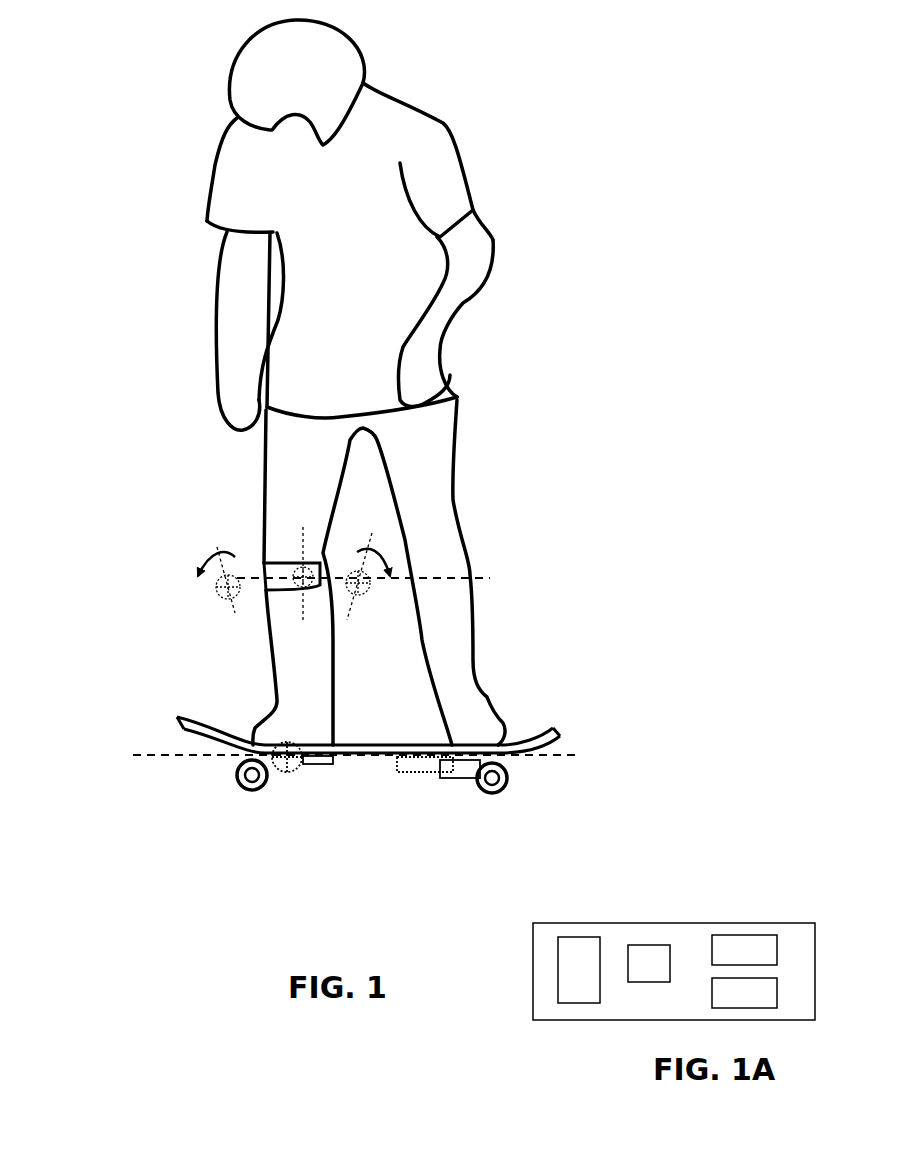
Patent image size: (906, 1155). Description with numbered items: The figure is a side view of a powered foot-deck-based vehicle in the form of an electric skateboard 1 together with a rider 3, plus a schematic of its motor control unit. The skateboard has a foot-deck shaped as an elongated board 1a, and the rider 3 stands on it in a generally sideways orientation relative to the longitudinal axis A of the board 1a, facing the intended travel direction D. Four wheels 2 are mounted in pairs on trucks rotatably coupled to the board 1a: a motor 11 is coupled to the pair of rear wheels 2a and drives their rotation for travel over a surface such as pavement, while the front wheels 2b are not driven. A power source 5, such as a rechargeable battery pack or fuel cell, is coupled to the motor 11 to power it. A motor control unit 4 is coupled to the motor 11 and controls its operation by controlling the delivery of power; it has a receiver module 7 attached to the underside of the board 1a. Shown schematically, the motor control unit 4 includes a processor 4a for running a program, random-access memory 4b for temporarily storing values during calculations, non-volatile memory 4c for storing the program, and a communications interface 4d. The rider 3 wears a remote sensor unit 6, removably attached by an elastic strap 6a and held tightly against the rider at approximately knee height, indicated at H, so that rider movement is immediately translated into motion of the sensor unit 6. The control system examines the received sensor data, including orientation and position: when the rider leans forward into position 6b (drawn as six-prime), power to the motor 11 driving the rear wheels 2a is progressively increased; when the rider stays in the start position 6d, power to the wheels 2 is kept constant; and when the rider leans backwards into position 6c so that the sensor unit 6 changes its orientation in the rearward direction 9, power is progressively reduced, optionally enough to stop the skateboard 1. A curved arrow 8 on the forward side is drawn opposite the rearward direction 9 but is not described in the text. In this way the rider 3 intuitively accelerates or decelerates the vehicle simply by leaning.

In FIG. 1, the electric skateboard 1 is at (346, 699).
In FIG. 1, the board 1a is at (530, 733).
In FIG. 1, the wheels 2 is at (398, 834).
In FIG. 1, the rear wheels 2a is at (510, 783).
In FIG. 1, the front wheels 2b is at (237, 788).
In FIG. 1, the rider 3 is at (207, 142).
In FIG. 1, the motor control unit 4 is at (320, 764).
In FIG. 1A, the motor control unit 4 is at (723, 905).
In FIG. 1A, the processor 4a is at (637, 955).
In FIG. 1A, the random-access memory 4b is at (755, 997).
In FIG. 1A, the non-volatile memory 4c is at (757, 945).
In FIG. 1A, the communications interface 4d is at (570, 995).
In FIG. 1, the power source 5 is at (423, 775).
In FIG. 1, the wearable remote sensor unit 6 is at (293, 570).
In FIG. 1, the elastic strap 6a is at (280, 563).
In FIG. 1, the leaning-forward position 6b is at (217, 594).
In FIG. 1, the leaning-backwards position 6c is at (370, 588).
In FIG. 1, the start position 6d is at (312, 620).
In FIG. 1, the receiver module 7 is at (287, 773).
In FIG. 1, the rotation direction 8 is at (203, 557).
In FIG. 1, the rearward direction 9 is at (433, 540).
In FIG. 1, the motor 11 is at (457, 778).
In FIG. 1, the longitudinal axis A is at (153, 757).
In FIG. 1, the travel direction D is at (197, 682).
In FIG. 1, the knee height H is at (483, 580).